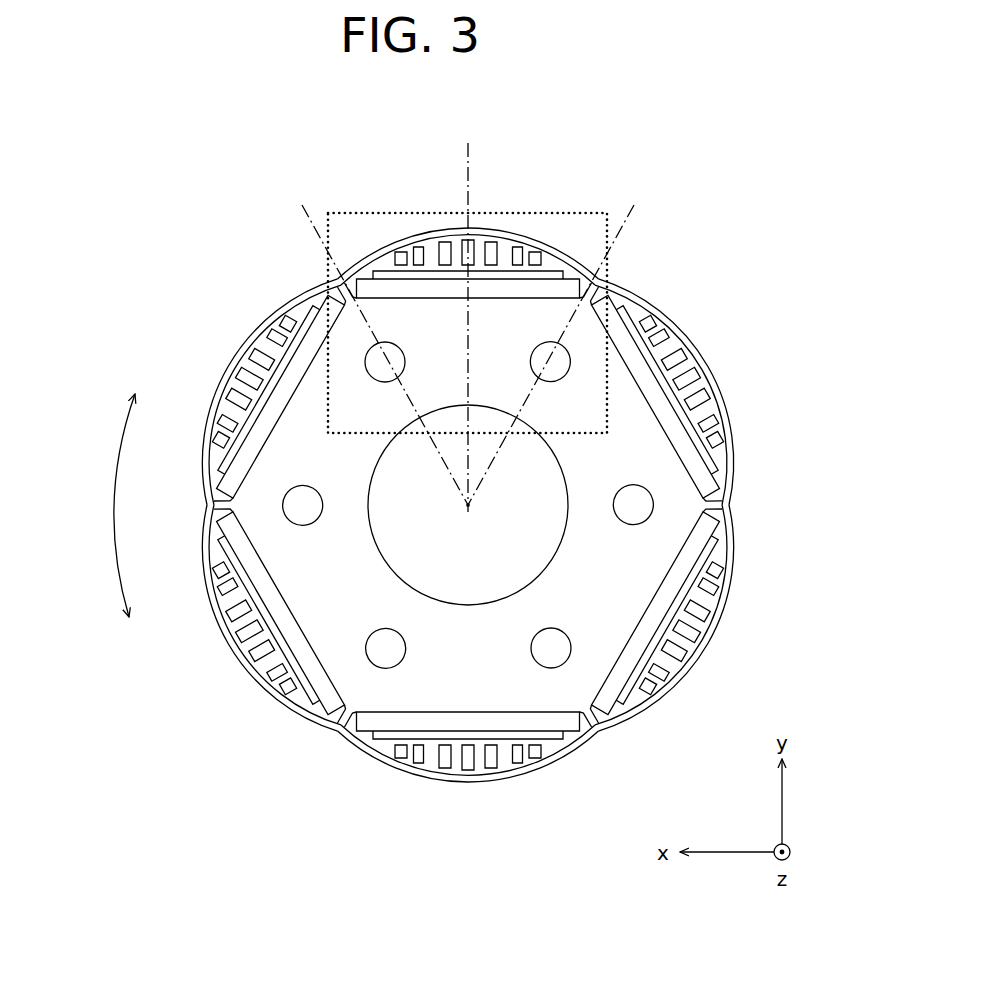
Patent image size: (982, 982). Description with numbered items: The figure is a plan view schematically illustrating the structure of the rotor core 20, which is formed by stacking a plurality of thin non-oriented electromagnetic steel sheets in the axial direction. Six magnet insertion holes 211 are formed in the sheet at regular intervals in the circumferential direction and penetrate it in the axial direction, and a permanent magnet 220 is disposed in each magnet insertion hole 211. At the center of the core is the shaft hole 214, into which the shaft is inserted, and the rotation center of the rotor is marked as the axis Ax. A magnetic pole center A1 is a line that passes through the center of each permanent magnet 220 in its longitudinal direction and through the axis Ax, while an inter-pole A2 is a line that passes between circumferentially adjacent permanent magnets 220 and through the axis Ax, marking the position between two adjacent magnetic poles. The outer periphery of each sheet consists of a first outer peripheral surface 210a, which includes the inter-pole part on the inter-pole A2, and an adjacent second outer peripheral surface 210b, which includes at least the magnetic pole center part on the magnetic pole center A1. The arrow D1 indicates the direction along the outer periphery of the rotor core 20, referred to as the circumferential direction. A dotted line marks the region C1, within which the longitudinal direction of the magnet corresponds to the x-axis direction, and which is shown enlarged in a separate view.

The rotor core 20 is at (183, 221).
The first outer peripheral surface 210a is at (329, 272).
The second outer peripheral surface 210b is at (494, 226).
The magnet insertion hole 211 is at (422, 300).
The shaft hole 214 is at (468, 606).
The permanent magnet 220 is at (498, 290).
The magnetic pole center A1 is at (471, 146).
The inter-pole A2 is at (466, 338).
The region C1 is at (410, 212).
The axis Ax is at (466, 509).
The circumferential direction D1 is at (107, 506).